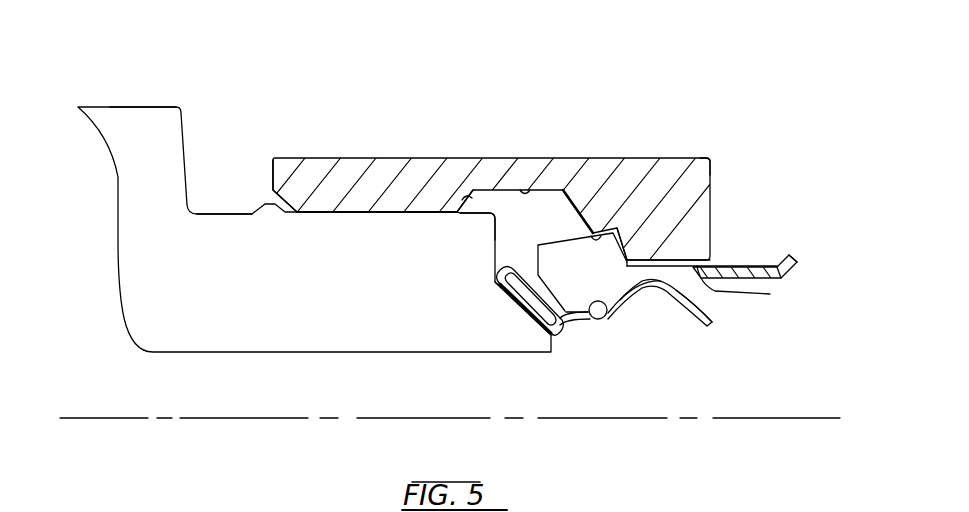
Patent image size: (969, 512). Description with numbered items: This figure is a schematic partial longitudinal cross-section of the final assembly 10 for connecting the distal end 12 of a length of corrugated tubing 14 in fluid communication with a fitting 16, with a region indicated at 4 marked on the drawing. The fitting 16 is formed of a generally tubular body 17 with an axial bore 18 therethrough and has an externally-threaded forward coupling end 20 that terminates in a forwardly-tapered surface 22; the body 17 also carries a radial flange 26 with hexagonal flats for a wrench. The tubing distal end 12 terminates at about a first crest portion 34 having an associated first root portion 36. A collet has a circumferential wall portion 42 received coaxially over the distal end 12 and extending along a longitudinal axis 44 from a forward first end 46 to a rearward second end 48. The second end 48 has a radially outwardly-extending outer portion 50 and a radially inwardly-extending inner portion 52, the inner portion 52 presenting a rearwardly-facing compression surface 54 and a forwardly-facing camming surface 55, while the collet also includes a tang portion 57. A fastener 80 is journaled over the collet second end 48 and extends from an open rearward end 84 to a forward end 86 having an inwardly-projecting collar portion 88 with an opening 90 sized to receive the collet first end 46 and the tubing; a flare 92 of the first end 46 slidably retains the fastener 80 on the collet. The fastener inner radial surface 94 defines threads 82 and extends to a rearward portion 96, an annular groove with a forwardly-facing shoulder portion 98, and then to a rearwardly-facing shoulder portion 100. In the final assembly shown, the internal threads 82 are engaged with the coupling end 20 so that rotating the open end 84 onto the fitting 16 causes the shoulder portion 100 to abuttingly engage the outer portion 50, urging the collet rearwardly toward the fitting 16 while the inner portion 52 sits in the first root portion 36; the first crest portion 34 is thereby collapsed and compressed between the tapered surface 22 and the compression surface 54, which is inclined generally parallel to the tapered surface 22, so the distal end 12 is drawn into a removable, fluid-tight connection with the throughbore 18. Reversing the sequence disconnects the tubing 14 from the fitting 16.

The connector 4 is at (793, 213).
The assembly 10 is at (673, 50).
The distal end 12 is at (556, 337).
The corrugated tubing 14 is at (724, 324).
The fitting 16 is at (205, 74).
The tubular body 17 is at (215, 213).
The axial bore 18 is at (247, 409).
The forward coupling end 20 is at (485, 212).
The forwardly-tapered surface 22 is at (500, 283).
The radial flange 26 is at (137, 107).
The first crest portion 34 is at (520, 273).
The first root portion 36 is at (607, 313).
The circumferential wall portion 42 is at (680, 260).
The longitudinal axis 44 is at (797, 417).
The first end 46 is at (798, 263).
The second end 48 is at (577, 208).
The outer portion 50 is at (608, 185).
The inner portion 52 is at (618, 313).
The compression surface 54 is at (586, 320).
The camming surface 55 is at (676, 322).
The tang portion 57 is at (731, 267).
The fastener 80 is at (691, 128).
The threads 82 is at (364, 213).
The open rearward end 84 is at (273, 177).
The forward end 86 is at (710, 161).
The collar portion 88 is at (695, 260).
The opening 90 is at (770, 294).
The flare 92 is at (778, 262).
The inner radial surface 94 is at (450, 213).
The rearward portion 96 is at (525, 188).
The forwardly-facing shoulder portion 98 is at (467, 200).
The rearwardly-facing shoulder portion 100 is at (596, 236).